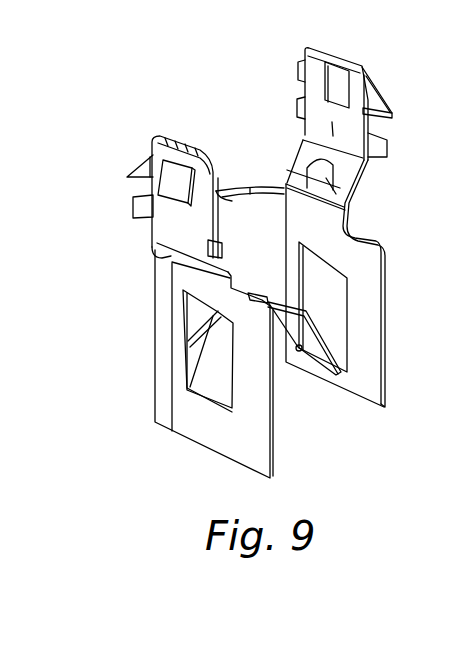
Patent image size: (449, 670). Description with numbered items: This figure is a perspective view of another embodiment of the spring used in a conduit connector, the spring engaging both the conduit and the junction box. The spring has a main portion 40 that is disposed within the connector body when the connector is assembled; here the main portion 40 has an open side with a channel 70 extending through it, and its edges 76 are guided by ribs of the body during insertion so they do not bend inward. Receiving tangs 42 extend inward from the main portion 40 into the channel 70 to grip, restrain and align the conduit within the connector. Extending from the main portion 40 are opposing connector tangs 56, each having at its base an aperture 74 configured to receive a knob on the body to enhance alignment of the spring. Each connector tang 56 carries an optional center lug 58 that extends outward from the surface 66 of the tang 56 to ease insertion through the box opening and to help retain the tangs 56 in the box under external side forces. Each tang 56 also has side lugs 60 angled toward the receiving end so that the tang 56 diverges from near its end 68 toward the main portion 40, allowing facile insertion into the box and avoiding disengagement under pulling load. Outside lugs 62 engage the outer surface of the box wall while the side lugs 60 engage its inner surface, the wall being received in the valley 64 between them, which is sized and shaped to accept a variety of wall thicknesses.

The main portion 40 is at (364, 275).
The receiving tang 42 is at (313, 345).
The connector tang 56 is at (360, 90).
The center lug 58 is at (173, 182).
The side lug 60 is at (380, 104).
The outside lug 62 is at (377, 150).
The valley 64 is at (372, 120).
The surface 66 is at (326, 136).
The end 68 is at (339, 47).
The channel 70 is at (287, 418).
The aperture 74 is at (340, 201).
The edge 76 is at (263, 436).